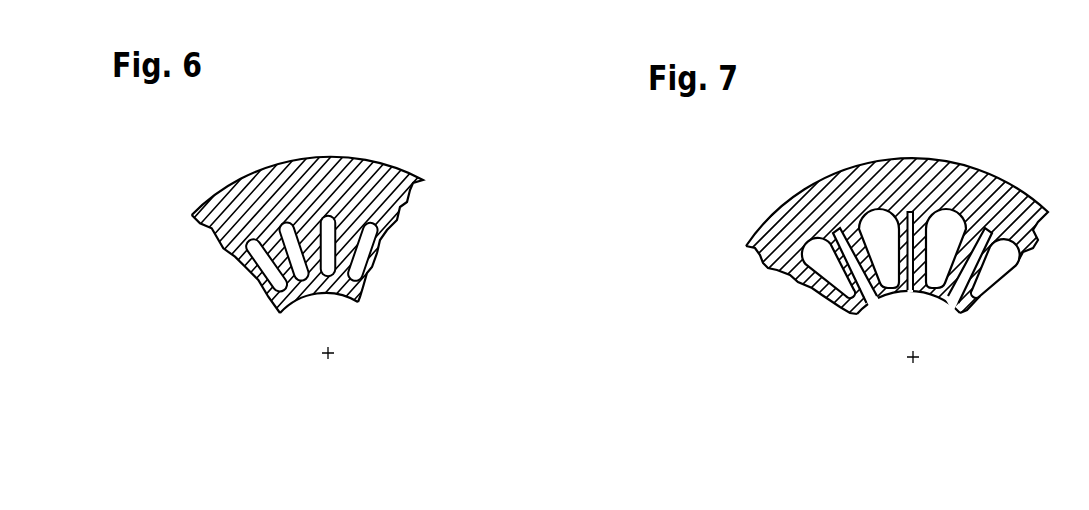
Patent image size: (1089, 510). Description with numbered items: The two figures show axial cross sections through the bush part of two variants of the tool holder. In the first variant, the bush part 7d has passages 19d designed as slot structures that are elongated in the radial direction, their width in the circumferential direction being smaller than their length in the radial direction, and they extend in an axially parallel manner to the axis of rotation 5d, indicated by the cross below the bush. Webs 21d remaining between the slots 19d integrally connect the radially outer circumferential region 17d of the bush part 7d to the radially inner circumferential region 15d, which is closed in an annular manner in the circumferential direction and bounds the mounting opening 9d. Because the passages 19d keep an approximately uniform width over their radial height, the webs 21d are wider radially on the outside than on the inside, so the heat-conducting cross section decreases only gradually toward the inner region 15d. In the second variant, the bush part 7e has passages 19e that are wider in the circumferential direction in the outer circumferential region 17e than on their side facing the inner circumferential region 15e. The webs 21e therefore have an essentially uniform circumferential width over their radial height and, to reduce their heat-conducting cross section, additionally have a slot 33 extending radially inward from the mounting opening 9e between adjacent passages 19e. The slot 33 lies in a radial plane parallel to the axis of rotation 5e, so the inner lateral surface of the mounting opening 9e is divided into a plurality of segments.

In FIG. 6, the bush part 7d is at (223, 183).
In FIG. 6, the radially outer circumferential region 17d is at (387, 197).
In FIG. 6, the passages 19d is at (260, 253).
In FIG. 6, the webs 21d is at (352, 225).
In FIG. 6, the radially inner circumferential region 15d is at (340, 293).
In FIG. 6, the tooth 9d is at (297, 307).
In FIG. 6, the axis of rotation 5d is at (333, 358).
In FIG. 7, the stator lamination segment 7e is at (812, 180).
In FIG. 7, the circumferential region 17e is at (1013, 207).
In FIG. 7, the passages 19e is at (822, 267).
In FIG. 7, the webs 21e is at (900, 210).
In FIG. 7, the circumferential region 15e is at (928, 293).
In FIG. 7, the mounting opening 9e is at (870, 310).
In FIG. 7, the slot 33 is at (888, 297).
In FIG. 7, the axis of rotation 5e is at (920, 365).